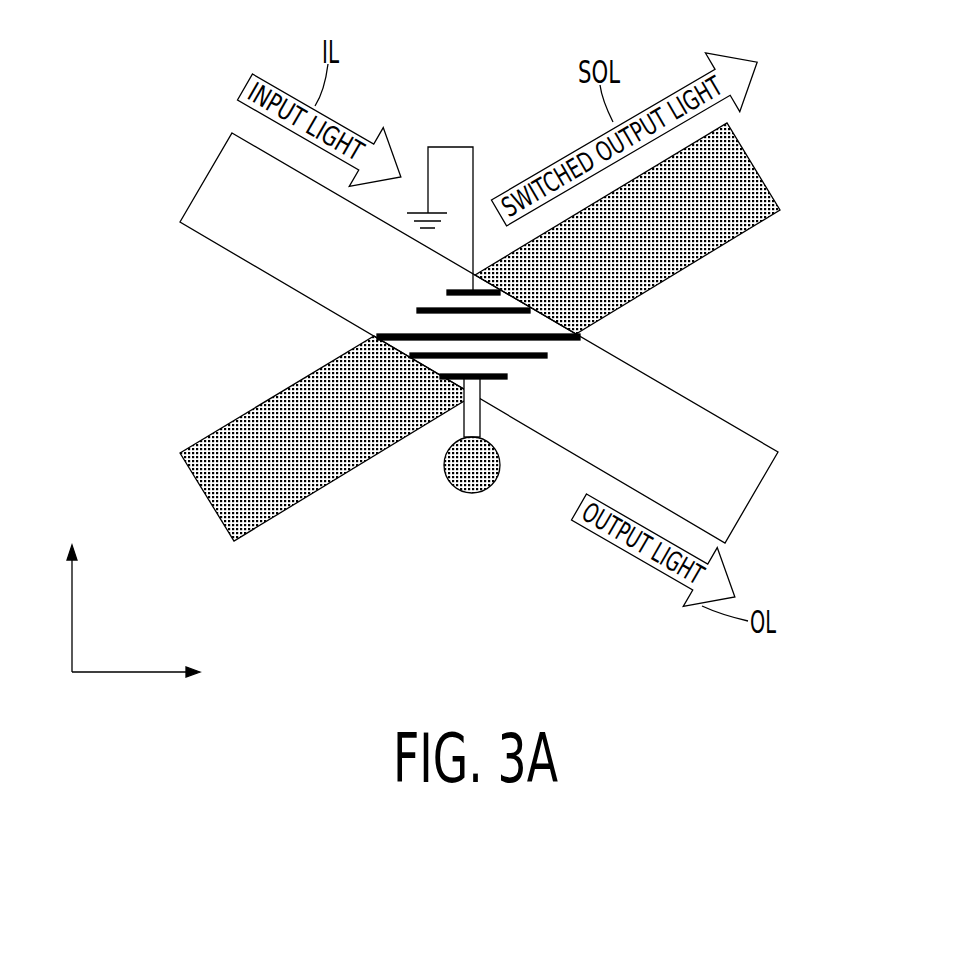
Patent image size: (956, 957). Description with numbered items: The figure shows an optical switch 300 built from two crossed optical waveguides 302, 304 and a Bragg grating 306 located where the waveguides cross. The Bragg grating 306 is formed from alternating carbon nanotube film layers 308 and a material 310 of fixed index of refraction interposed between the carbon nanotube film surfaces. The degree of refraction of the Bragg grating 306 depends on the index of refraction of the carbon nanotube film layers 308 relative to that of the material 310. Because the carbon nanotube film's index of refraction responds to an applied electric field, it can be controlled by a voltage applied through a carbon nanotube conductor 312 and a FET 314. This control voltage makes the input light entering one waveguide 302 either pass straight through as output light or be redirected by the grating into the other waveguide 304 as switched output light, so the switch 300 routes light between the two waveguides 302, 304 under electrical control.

The optical switch 300 is at (270, 768).
The optical waveguide 302 is at (218, 188).
The optical waveguide 304 is at (740, 172).
The Bragg grating 306 is at (402, 317).
The carbon nanotube film layers 308 is at (572, 357).
The material interposed between the carbon nanotube film surfaces 310 is at (512, 362).
The carbon nanotube conductor 312 is at (470, 413).
The FET 314 is at (472, 480).